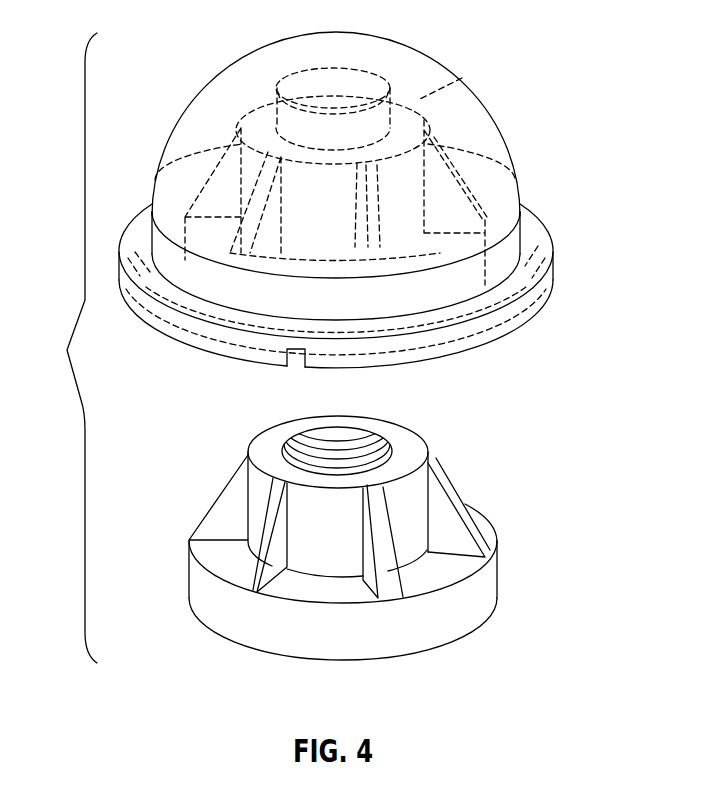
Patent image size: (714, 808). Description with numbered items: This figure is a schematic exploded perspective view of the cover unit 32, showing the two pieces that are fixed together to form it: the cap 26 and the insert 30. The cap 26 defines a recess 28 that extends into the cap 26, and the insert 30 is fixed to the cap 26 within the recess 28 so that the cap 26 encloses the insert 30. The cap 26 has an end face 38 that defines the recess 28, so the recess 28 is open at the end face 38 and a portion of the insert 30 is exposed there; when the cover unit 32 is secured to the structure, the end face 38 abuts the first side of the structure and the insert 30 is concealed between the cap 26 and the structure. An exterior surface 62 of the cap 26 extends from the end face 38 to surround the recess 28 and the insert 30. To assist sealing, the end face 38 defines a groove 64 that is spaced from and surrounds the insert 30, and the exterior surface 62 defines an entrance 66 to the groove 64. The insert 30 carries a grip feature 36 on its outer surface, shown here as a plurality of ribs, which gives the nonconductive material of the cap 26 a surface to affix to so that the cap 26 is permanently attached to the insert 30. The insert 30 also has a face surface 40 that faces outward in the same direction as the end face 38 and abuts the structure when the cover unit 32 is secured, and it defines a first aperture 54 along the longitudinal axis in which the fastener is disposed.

The cap 26 is at (580, 144).
The recess 28 is at (462, 78).
The exterior surface 62 is at (489, 119).
The end face 38 is at (503, 340).
The groove 64 is at (166, 334).
The entrance 66 is at (292, 366).
The insert 30 is at (512, 496).
The first aperture 54 is at (378, 442).
The grip feature 36 is at (387, 586).
The face surface 40 is at (342, 667).
The cover unit 32 is at (65, 348).